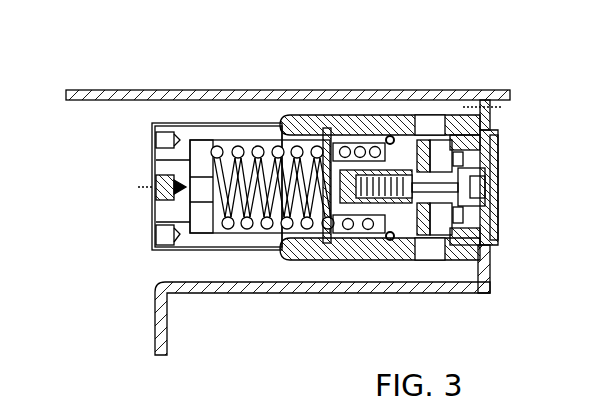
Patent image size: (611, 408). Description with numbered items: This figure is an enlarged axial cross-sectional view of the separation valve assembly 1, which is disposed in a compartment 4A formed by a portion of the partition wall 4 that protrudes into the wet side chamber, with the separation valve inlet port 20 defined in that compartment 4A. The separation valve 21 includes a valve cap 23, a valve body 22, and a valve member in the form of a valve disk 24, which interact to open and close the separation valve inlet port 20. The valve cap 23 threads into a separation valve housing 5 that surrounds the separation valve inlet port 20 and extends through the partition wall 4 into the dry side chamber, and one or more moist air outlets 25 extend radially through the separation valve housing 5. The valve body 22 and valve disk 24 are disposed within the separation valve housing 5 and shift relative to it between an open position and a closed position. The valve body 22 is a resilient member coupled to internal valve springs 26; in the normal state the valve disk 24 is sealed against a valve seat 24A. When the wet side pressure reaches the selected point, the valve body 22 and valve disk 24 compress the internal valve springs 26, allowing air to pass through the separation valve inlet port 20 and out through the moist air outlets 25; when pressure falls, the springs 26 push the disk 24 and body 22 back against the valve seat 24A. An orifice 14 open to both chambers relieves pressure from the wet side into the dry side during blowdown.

The separation valve assembly 1 is at (188, 106).
The partition wall 4 is at (157, 313).
The compartment 4A is at (467, 280).
The separation valve housing 5 is at (350, 122).
The orifice 14 is at (482, 107).
The separation valve inlet port 20 is at (490, 187).
The separation valve 21 is at (270, 116).
The valve body 22 is at (402, 143).
The valve cap 23 is at (165, 160).
The valve disk 24 is at (462, 162).
The valve seat 24A is at (458, 218).
The moist air outlets 25 is at (428, 122).
The internal valve spring 26 is at (395, 228).